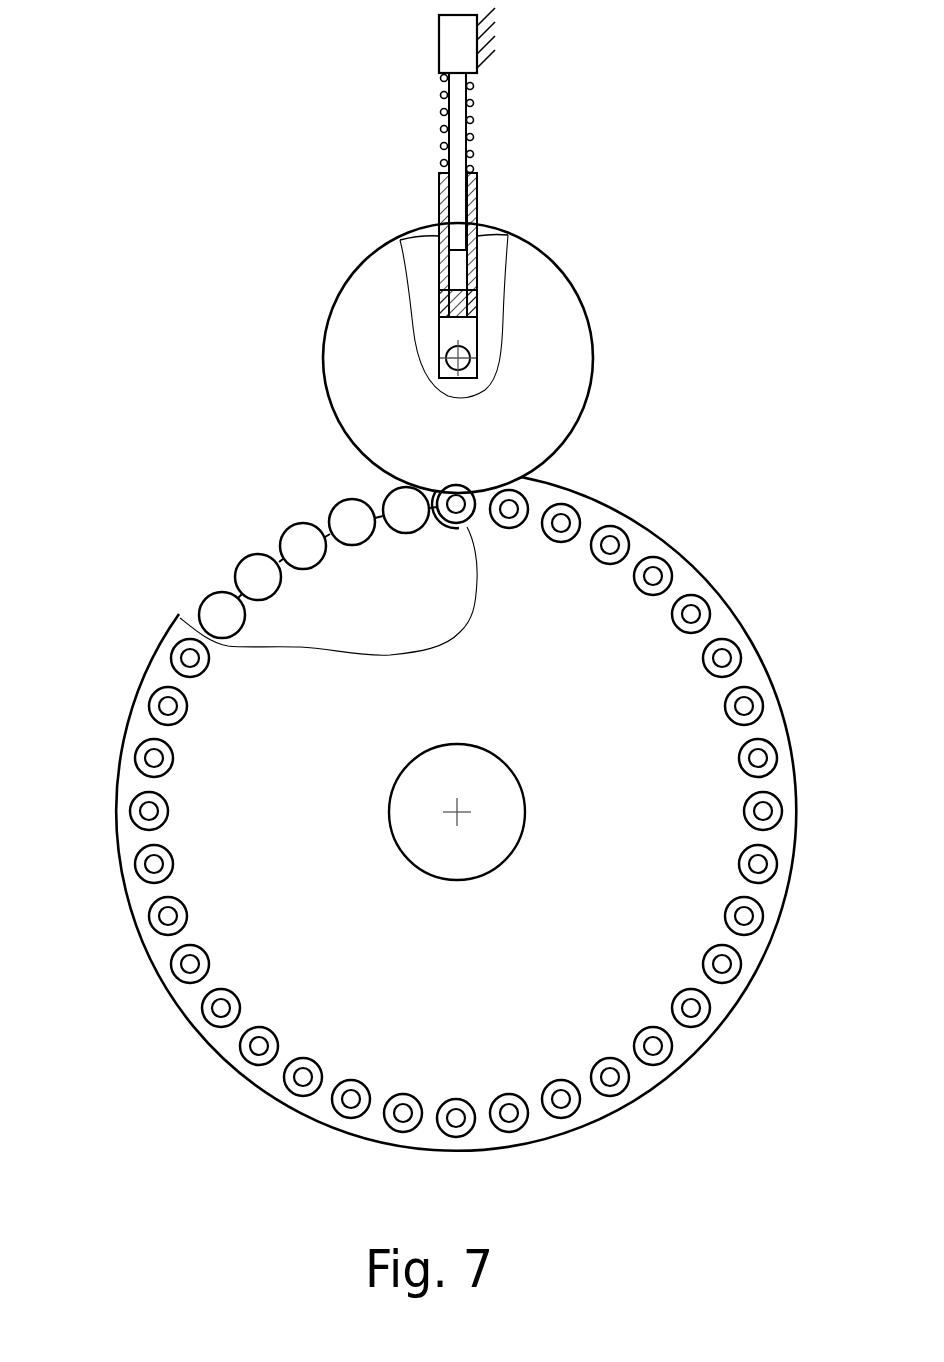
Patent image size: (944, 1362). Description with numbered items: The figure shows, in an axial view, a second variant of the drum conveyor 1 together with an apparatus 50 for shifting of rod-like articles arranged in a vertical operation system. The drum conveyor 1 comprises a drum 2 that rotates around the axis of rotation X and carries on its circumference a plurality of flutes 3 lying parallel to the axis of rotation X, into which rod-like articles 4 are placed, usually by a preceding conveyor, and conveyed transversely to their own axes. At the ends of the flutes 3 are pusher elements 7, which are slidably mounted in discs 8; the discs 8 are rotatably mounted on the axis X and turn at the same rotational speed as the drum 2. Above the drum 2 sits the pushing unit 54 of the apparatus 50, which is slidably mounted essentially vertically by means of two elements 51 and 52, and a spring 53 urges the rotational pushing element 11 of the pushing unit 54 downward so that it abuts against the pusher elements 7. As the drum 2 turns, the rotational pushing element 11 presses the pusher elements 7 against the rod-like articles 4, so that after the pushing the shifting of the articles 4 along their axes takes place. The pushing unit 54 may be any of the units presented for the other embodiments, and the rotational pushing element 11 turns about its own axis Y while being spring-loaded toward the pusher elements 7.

The drum conveyor 1 is at (268, 513).
The drum 2 is at (357, 582).
The flutes 3 is at (242, 623).
The rod-like articles 4 is at (283, 520).
The pusher elements 7 is at (563, 520).
The discs 8 is at (247, 937).
The rotational pushing element 11 is at (560, 300).
The apparatus for shifting of rod-like articles 50 is at (394, 193).
The mounting element 51 is at (456, 104).
The mounting element 52 is at (477, 225).
The spring 53 is at (472, 135).
The pushing unit 54 is at (486, 250).
The axis of rotation X is at (457, 812).
The axis of pressing wheel Y is at (455, 358).